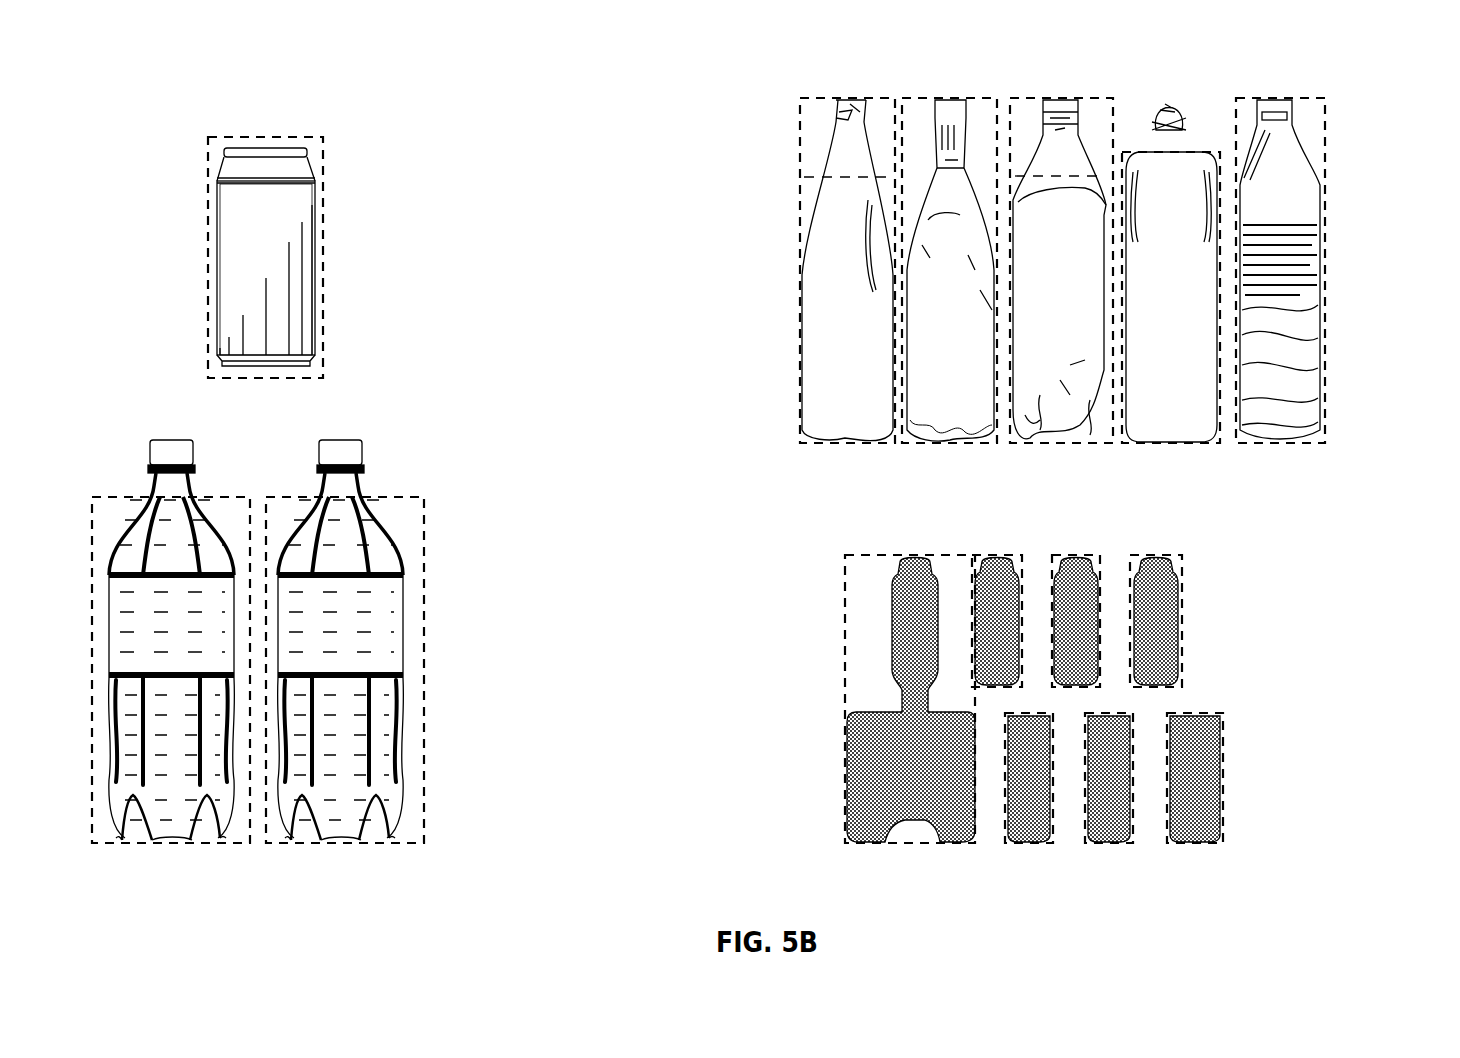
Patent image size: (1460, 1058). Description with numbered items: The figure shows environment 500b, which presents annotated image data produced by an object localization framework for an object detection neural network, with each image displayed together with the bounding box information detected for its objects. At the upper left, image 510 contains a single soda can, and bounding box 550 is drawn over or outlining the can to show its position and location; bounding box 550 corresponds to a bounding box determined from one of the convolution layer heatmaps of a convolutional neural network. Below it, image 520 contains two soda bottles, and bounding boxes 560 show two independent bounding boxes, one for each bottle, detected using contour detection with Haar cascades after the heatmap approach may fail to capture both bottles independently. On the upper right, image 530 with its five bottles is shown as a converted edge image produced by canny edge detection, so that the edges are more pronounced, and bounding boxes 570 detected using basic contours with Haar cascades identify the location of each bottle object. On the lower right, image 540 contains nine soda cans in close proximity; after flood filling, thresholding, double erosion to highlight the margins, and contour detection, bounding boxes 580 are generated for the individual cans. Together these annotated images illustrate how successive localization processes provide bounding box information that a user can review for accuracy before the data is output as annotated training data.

The environment 500b is at (211, 73).
The image 510 is at (273, 257).
The image 520 is at (313, 679).
The image 530 is at (1122, 312).
The image 540 is at (1104, 733).
The bounding box 550 is at (197, 238).
The bounding boxes 560 is at (180, 848).
The bounding boxes 570 is at (1061, 312).
The bounding boxes 580 is at (1222, 860).